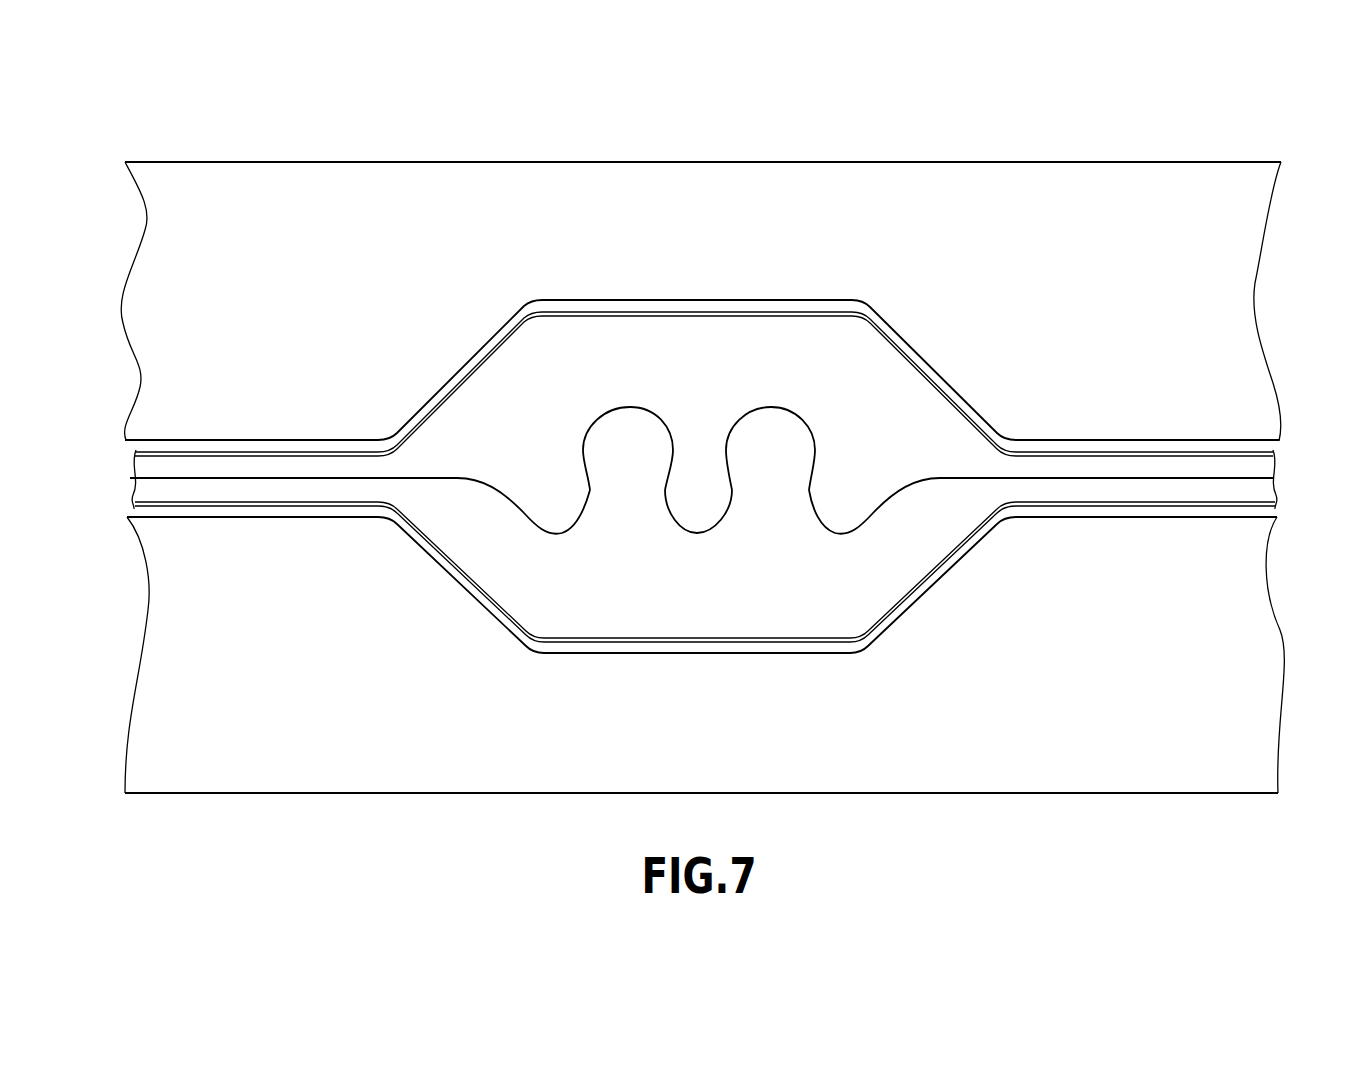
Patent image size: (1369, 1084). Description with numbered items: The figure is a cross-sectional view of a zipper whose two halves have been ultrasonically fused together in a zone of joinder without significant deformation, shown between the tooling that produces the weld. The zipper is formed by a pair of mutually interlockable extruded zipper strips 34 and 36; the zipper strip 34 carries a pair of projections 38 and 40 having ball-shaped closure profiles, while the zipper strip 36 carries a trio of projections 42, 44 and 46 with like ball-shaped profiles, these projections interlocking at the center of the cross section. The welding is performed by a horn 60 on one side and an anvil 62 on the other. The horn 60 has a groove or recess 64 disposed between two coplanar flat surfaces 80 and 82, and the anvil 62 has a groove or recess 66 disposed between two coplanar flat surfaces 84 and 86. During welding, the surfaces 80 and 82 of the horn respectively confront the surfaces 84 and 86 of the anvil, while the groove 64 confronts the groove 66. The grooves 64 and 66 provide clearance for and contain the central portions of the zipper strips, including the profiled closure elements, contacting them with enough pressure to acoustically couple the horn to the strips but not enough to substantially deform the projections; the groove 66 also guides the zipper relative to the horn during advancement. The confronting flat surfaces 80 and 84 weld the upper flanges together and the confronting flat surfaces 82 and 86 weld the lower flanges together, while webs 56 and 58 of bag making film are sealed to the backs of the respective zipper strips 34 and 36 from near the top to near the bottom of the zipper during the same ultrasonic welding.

The zipper strip 34 is at (673, 623).
The zipper strip 36 is at (572, 327).
The projection 38 is at (770, 420).
The projection 40 is at (625, 417).
The projection 42 is at (838, 525).
The projection 44 is at (697, 527).
The projection 46 is at (553, 520).
The web 56 is at (903, 345).
The web 58 is at (920, 585).
The horn 60 is at (360, 160).
The anvil 62 is at (297, 793).
The groove 64 is at (488, 348).
The groove 66 is at (433, 560).
The flat surface 80 is at (200, 440).
The flat surface 82 is at (1167, 440).
The flat surface 84 is at (180, 517).
The flat surface 86 is at (1180, 517).